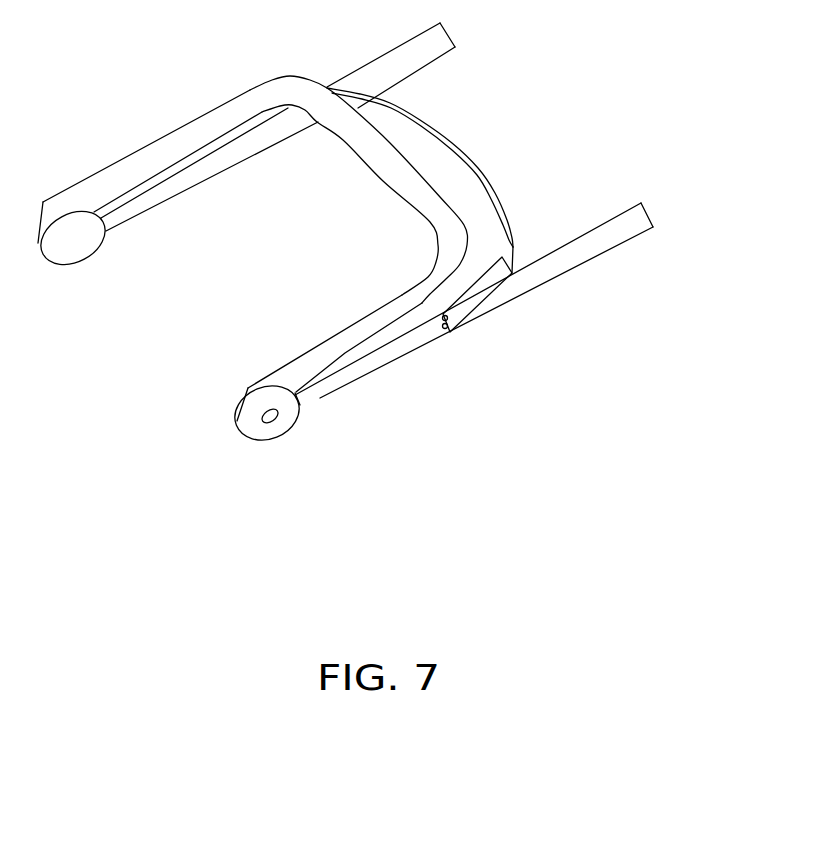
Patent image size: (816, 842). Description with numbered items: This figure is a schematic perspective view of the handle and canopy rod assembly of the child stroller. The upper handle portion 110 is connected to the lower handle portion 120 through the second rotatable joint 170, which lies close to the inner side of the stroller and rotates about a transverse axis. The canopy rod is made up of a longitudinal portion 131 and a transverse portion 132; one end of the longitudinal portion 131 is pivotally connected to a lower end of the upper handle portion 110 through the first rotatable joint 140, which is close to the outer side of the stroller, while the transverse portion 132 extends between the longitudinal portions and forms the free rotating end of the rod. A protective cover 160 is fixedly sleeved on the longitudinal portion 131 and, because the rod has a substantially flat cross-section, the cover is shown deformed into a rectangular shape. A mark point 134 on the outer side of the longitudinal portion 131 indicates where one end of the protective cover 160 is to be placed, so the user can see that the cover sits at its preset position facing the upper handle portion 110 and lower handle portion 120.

The upper handle portion 110 is at (137, 163).
The lower handle portion 120 is at (618, 232).
The longitudinal portion 131 is at (318, 402).
The transverse portion 132 is at (457, 143).
The mark point 134 is at (443, 327).
The first rotatable joint 140 is at (240, 431).
The protective cover 160 is at (478, 296).
The second rotatable joint 170 is at (78, 233).